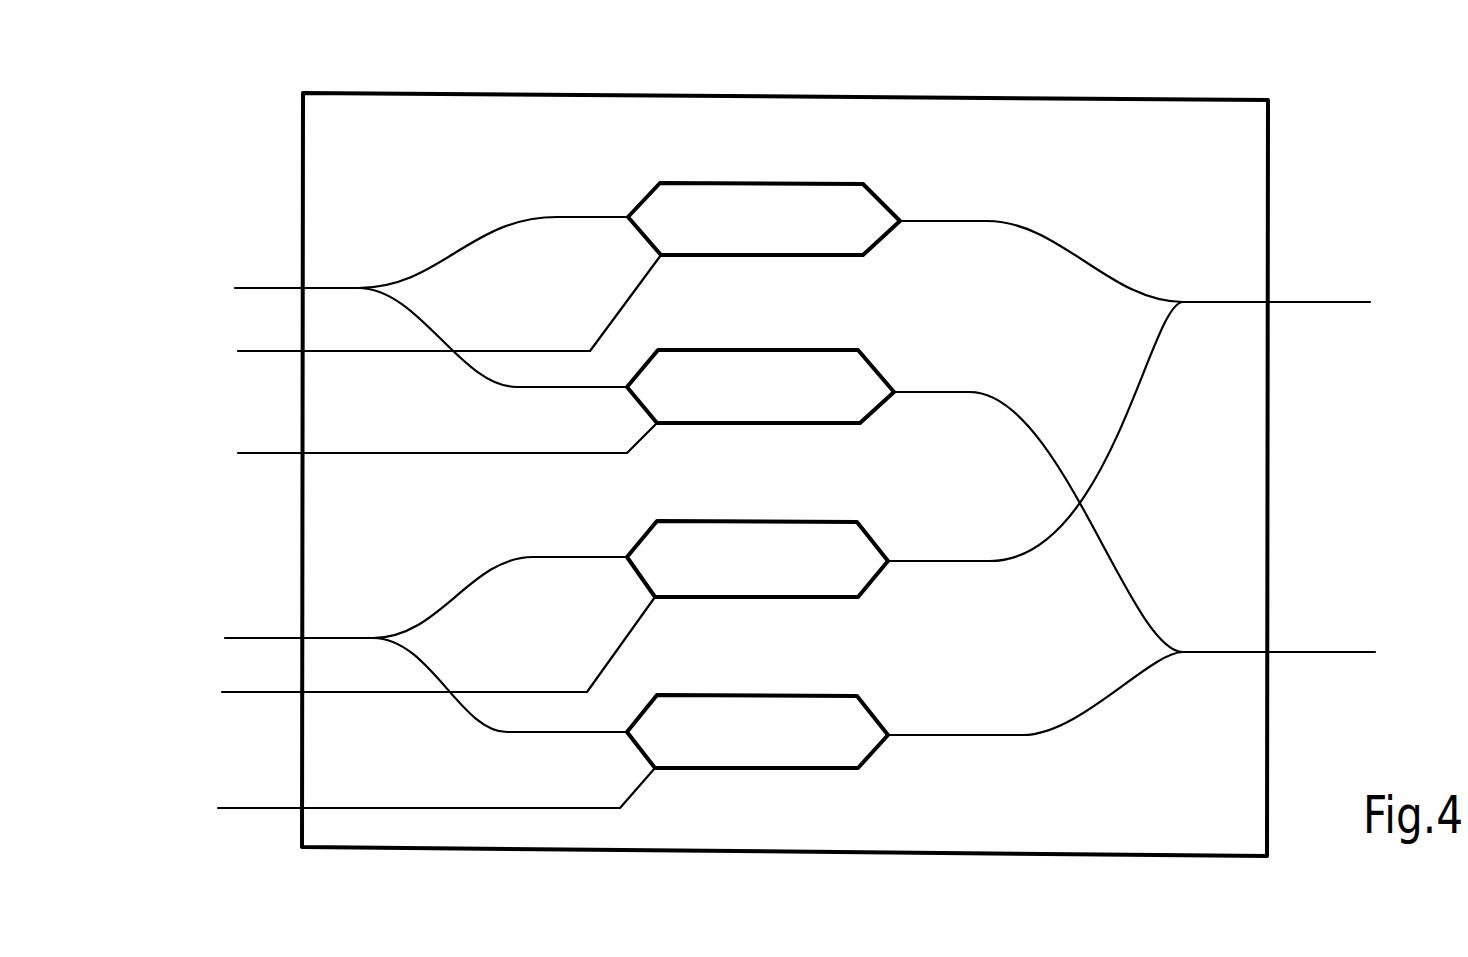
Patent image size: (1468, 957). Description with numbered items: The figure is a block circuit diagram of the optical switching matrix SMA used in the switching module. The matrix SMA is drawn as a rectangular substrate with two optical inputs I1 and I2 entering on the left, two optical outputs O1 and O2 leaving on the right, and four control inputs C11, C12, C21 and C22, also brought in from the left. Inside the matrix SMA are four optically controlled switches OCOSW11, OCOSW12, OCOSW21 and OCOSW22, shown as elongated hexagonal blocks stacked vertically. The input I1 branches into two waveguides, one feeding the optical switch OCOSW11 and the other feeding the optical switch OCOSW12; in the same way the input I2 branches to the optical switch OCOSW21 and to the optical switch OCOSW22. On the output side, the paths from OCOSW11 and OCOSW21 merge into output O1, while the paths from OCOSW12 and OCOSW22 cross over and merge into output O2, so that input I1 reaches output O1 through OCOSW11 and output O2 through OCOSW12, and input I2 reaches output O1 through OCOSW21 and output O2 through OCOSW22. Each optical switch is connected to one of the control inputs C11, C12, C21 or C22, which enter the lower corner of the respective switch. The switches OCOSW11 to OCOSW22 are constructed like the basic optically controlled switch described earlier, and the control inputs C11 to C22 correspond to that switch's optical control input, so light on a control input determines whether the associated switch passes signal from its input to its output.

The optical switching matrix SMA is at (1213, 108).
The optically controlled switch OCOSW11 is at (764, 190).
The optically controlled switch OCOSW12 is at (760, 360).
The optically controlled switch OCOSW21 is at (757, 533).
The optically controlled switch OCOSW22 is at (757, 707).
The input I1 is at (431, 302).
The input I2 is at (426, 644).
The control input C11 is at (419, 313).
The control input C12 is at (417, 449).
The control input C21 is at (405, 656).
The control input C22 is at (405, 799).
The output O1 is at (1129, 391).
The output O2 is at (1131, 563).